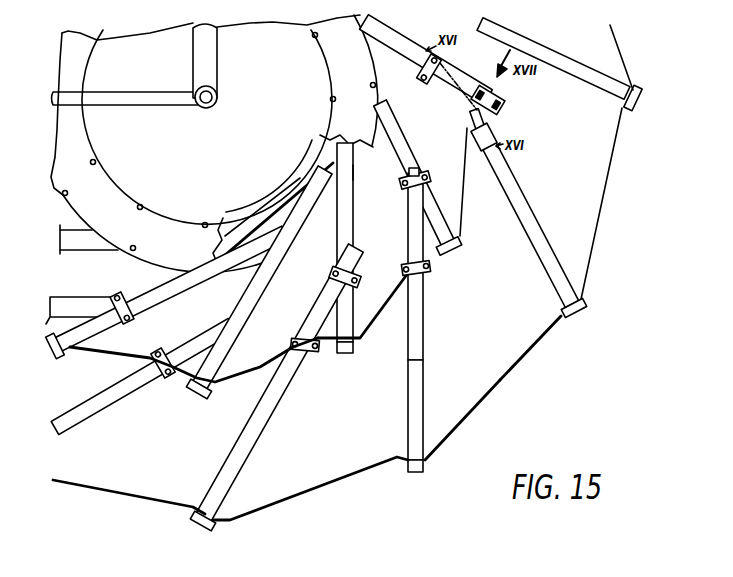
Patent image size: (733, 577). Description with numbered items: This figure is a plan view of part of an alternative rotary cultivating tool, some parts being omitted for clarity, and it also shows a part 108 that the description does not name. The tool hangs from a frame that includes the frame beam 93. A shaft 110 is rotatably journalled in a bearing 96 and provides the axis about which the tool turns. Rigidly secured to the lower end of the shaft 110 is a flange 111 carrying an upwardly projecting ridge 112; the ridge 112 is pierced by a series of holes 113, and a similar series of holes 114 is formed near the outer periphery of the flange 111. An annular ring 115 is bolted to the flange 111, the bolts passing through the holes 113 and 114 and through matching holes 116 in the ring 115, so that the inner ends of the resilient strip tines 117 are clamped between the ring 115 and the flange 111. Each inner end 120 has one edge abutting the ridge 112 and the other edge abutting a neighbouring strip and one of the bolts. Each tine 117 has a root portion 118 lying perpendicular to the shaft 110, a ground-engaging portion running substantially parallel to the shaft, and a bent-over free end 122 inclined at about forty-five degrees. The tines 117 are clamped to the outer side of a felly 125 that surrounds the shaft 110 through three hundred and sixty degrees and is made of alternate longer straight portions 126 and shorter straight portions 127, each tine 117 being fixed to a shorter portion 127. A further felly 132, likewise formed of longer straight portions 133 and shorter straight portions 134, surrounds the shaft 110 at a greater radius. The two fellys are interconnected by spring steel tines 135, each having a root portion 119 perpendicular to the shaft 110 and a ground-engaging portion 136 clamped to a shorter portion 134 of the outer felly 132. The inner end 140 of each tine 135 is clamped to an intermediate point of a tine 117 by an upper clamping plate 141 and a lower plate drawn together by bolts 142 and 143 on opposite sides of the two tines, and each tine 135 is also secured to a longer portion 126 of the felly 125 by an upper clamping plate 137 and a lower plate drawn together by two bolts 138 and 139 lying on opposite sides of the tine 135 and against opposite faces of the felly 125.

The frame beam 93 is at (212, 57).
The bearing 96 is at (208, 108).
The arm 108 is at (133, 95).
The shaft 110 is at (218, 100).
The flange 111 is at (240, 263).
The ridge 112 is at (237, 221).
The holes 113 is at (315, 163).
The holes 114 is at (360, 175).
The annular ring 115 is at (157, 218).
The matching holes 116 is at (94, 165).
The tines 117 is at (402, 38).
The root portion 118 is at (386, 33).
The root portion 119 is at (425, 387).
The inner end 120 is at (307, 192).
The bent-over portion 122 is at (500, 104).
The felly 125 is at (249, 367).
The longer straight portions 126 is at (465, 193).
The shorter straight portions 127 is at (360, 331).
The further felly 132 is at (492, 385).
The longer straight portions 133 is at (520, 357).
The shorter straight portions 134 is at (427, 461).
The tines 135 is at (427, 336).
The ground-engaging portion 136 is at (403, 469).
The upper clamping plate 137 is at (488, 136).
The bolt 138 is at (402, 268).
The bolt 139 is at (430, 264).
The inner end 140 is at (411, 163).
The upper clamping plate 141 is at (420, 170).
The bolt 142 is at (427, 177).
The bolt 143 is at (402, 188).